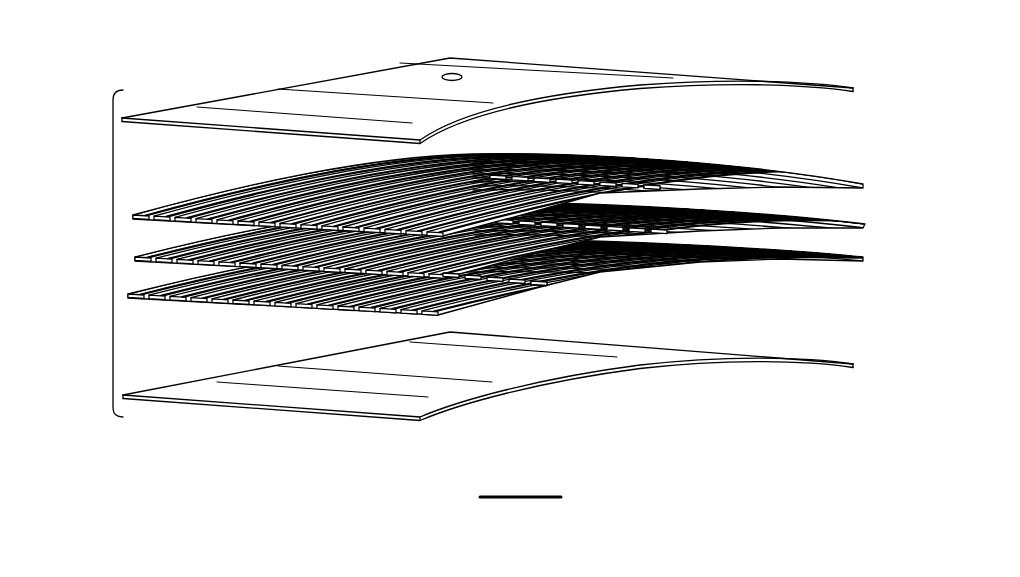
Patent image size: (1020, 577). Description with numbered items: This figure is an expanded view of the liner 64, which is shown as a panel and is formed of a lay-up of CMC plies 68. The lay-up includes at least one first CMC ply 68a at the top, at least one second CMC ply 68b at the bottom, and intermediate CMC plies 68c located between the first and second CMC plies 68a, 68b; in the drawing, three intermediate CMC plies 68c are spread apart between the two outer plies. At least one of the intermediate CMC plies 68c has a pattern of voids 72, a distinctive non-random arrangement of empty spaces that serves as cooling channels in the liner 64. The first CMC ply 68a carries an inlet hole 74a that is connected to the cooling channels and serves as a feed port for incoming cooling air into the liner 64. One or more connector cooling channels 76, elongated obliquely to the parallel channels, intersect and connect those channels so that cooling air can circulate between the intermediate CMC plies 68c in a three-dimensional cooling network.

The liner 64 is at (113, 251).
The CMC plies 68 is at (788, 110).
The first CMC ply 68a is at (683, 76).
The second CMC ply 68b is at (486, 393).
The intermediate CMC plies 68c is at (853, 207).
The pattern of voids 72 is at (296, 190).
The inlet hole 74a is at (458, 73).
The connector cooling channel 76 is at (538, 283).